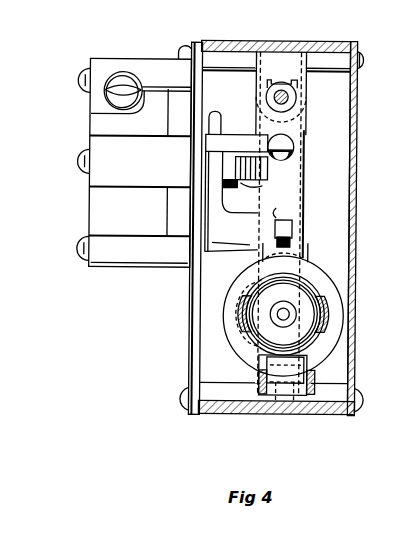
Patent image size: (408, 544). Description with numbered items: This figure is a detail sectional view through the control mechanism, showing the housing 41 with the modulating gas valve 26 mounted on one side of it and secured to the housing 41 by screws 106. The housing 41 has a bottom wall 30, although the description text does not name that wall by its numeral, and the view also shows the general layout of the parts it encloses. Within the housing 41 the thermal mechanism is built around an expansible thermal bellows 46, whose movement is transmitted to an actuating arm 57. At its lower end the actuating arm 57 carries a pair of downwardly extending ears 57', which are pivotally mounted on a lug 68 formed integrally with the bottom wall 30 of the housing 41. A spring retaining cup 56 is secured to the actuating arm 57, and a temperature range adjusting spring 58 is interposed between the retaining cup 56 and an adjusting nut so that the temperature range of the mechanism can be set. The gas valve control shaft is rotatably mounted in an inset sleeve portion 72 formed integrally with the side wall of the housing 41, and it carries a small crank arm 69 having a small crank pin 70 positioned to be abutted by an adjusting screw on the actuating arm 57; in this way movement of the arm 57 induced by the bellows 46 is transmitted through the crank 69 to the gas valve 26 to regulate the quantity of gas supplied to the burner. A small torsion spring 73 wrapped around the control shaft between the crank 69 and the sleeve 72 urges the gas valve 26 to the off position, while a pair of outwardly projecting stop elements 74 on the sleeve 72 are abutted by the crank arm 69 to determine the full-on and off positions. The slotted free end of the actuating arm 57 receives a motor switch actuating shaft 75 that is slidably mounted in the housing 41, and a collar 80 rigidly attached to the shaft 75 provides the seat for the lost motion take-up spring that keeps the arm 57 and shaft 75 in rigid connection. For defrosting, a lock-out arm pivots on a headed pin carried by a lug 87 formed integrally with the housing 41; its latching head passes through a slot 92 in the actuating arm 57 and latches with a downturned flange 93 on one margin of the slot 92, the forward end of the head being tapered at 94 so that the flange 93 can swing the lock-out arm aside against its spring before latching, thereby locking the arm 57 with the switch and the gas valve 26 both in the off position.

The housing 41 is at (228, 44).
The bottom wall 30 is at (262, 414).
The modulating gas valve 26 is at (103, 200).
The screws 106 is at (84, 156).
The collar 80 is at (290, 98).
The motor switch actuating shaft 75 is at (275, 98).
The actuating arm 57 is at (297, 224).
The downwardly extending ears 57' is at (282, 377).
The stop elements 74 is at (228, 142).
The crank pin 70 is at (290, 143).
The crank arm 69 is at (267, 168).
The inset sleeve portion 72 is at (229, 188).
The torsion spring 73 is at (245, 185).
The lug 87 is at (232, 201).
The downturned flange 93 is at (293, 224).
The slot 92 is at (291, 237).
The tapered forward end 94 is at (285, 214).
The expansible thermal bellows 46 is at (325, 281).
The spring retaining cup 56 is at (246, 303).
The temperature range adjusting spring 58 is at (316, 317).
The lug 68 is at (282, 373).